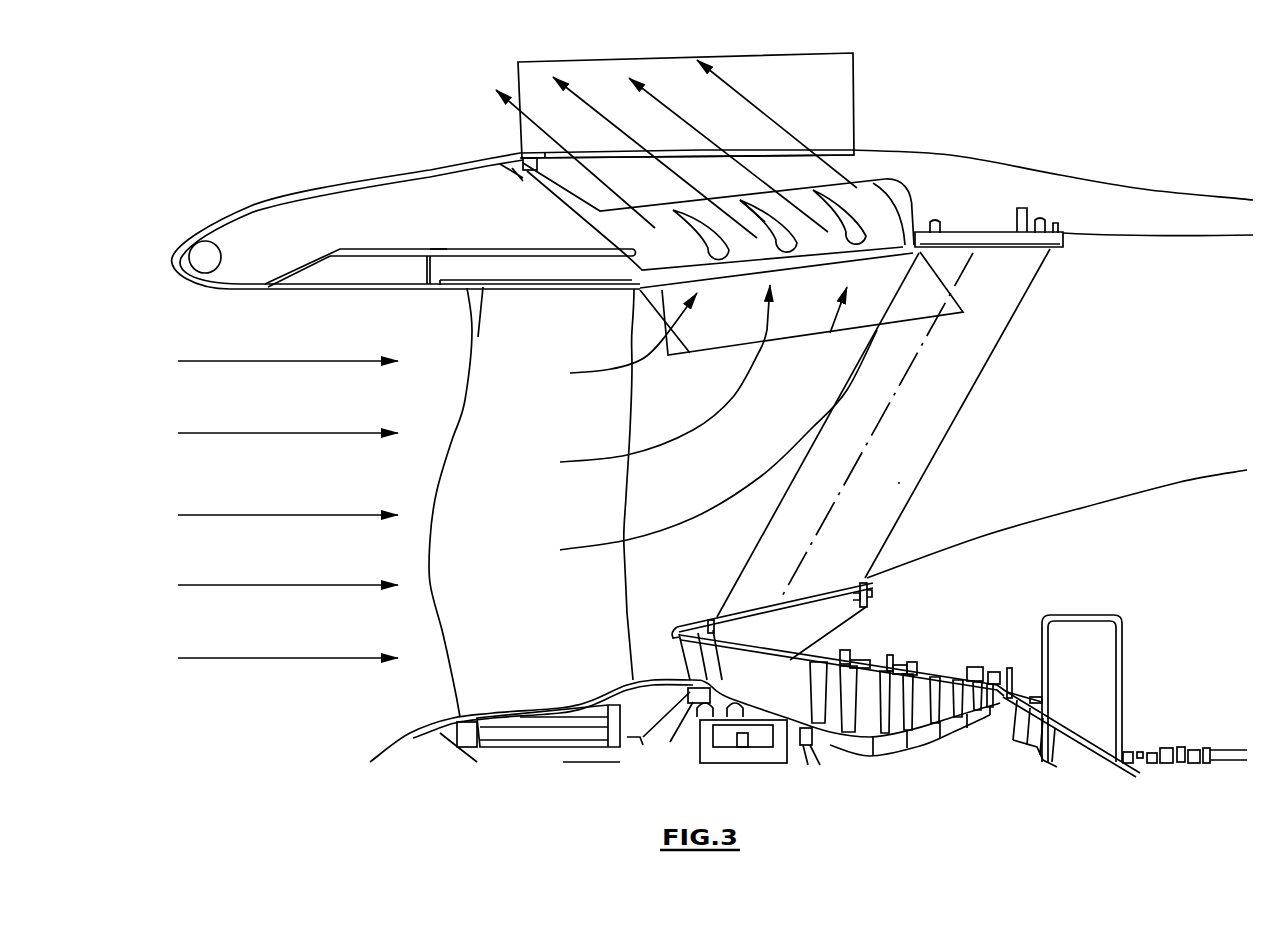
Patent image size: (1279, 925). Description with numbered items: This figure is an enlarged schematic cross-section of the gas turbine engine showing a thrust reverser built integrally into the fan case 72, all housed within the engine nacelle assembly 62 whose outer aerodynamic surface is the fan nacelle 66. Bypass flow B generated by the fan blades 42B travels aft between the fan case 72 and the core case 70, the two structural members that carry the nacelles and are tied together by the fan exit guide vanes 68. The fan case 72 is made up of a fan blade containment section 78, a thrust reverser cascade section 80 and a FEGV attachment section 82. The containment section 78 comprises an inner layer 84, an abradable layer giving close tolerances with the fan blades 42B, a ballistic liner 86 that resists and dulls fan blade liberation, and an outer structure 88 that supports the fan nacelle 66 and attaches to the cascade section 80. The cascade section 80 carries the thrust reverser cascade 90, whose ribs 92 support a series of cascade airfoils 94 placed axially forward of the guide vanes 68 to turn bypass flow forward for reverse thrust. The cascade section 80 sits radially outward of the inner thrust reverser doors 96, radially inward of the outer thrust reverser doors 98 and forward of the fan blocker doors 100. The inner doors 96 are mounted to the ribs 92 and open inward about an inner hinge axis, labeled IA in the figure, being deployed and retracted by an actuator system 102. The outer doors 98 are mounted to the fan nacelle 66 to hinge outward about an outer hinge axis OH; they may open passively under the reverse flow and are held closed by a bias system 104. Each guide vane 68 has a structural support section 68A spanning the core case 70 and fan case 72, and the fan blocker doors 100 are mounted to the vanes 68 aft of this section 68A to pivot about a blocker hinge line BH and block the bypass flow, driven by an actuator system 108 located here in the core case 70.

The engine nacelle assembly 62 is at (1130, 206).
The fan nacelle 66 is at (983, 160).
The fan case 72 is at (997, 197).
The fan blade containment section 78 is at (466, 242).
The outer structure 88 is at (447, 248).
The ballistic liner 86 is at (460, 267).
The inner layer 84 is at (478, 337).
The fan blades 42B is at (547, 449).
The bias system 104 is at (517, 170).
The outer hinge axis OH is at (545, 152).
The outer thrust reverser doors 98 is at (618, 94).
The ribs 92 is at (693, 262).
The thrust reverser cascade 90 is at (800, 210).
The cascade airfoils 94 is at (710, 230).
The thrust reverser cascade section 80 is at (862, 196).
The actuator system 102 is at (915, 232).
The FEGV attachment section 82 is at (997, 228).
The inner thrust reverser doors 96 is at (817, 316).
The inlet angle IA is at (666, 318).
The fan exit guide vanes 68 is at (988, 303).
The structural support section 68A is at (887, 409).
The fan blocker doors 100 is at (940, 427).
The blocker hinge line BH is at (850, 478).
The core case 70 is at (852, 586).
The actuator system 108 is at (803, 638).
The bypass flow B is at (246, 433).